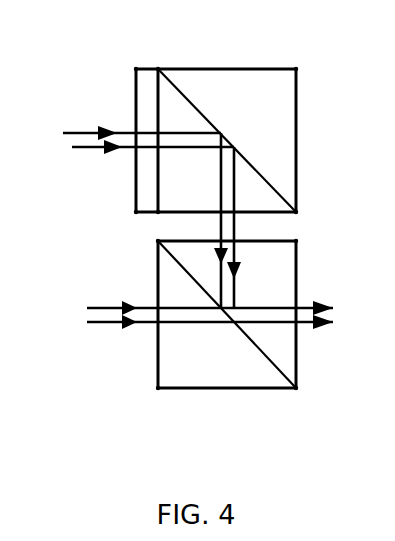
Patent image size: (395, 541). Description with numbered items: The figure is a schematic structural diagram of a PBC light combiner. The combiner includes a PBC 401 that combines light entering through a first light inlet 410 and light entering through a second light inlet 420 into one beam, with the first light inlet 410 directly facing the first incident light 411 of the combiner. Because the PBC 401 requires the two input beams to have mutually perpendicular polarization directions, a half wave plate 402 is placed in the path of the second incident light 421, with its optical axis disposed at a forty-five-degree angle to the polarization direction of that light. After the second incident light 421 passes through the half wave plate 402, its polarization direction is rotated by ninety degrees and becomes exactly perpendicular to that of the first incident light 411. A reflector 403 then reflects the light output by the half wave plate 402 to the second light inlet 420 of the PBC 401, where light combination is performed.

The PBC 401 is at (191, 307).
The half wave plate 402 is at (117, 112).
The reflector 403 is at (216, 112).
The first light inlet 410 is at (147, 335).
The first incident light 411 is at (180, 315).
The second light inlet 420 is at (243, 237).
The second incident light 421 is at (127, 143).